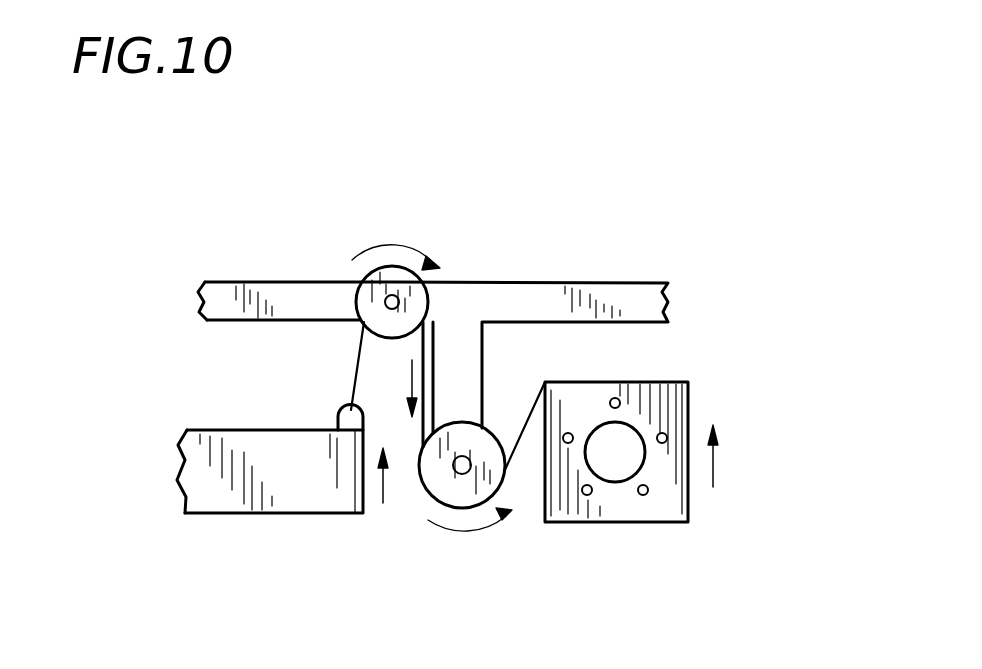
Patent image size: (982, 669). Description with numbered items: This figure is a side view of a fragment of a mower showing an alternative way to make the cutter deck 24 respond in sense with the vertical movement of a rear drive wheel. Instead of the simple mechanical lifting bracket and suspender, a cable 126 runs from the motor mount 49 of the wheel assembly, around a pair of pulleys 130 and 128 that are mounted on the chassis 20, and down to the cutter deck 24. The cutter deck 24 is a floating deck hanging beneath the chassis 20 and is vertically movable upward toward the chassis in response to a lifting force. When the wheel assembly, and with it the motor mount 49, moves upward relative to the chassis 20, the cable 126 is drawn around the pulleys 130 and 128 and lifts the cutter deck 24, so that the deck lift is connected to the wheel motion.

The chassis 20 is at (527, 280).
The pulley 128 is at (395, 268).
The pulley 130 is at (425, 490).
The cable 126 is at (353, 367).
The cutter deck 24 is at (280, 500).
The motor mount 49 is at (673, 403).